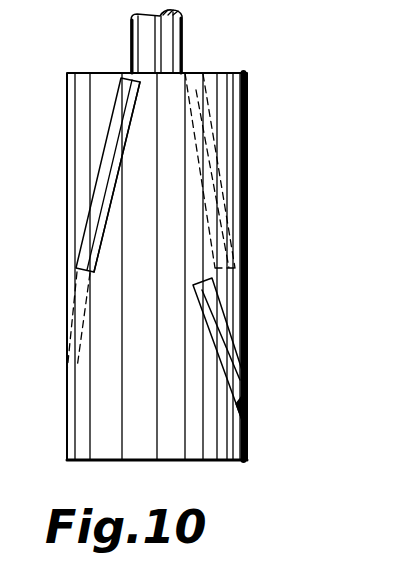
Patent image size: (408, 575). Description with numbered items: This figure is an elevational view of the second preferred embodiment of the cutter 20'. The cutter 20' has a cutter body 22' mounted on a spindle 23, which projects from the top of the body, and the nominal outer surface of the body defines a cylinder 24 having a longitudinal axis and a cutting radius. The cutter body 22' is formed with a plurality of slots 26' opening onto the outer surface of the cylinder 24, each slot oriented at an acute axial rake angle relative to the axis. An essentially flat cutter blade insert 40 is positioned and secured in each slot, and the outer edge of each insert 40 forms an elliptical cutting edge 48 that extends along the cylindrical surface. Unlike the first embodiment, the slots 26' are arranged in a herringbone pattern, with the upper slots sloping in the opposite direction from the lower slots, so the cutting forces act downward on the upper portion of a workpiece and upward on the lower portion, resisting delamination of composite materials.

The cutter 20' is at (198, 266).
The cutter body 22' is at (224, 266).
The spindle 23 is at (168, 47).
The cylinder 24 is at (248, 333).
The slots 26' is at (75, 175).
The cutter blade insert 40 is at (215, 135).
The cutting edge 48 is at (120, 185).